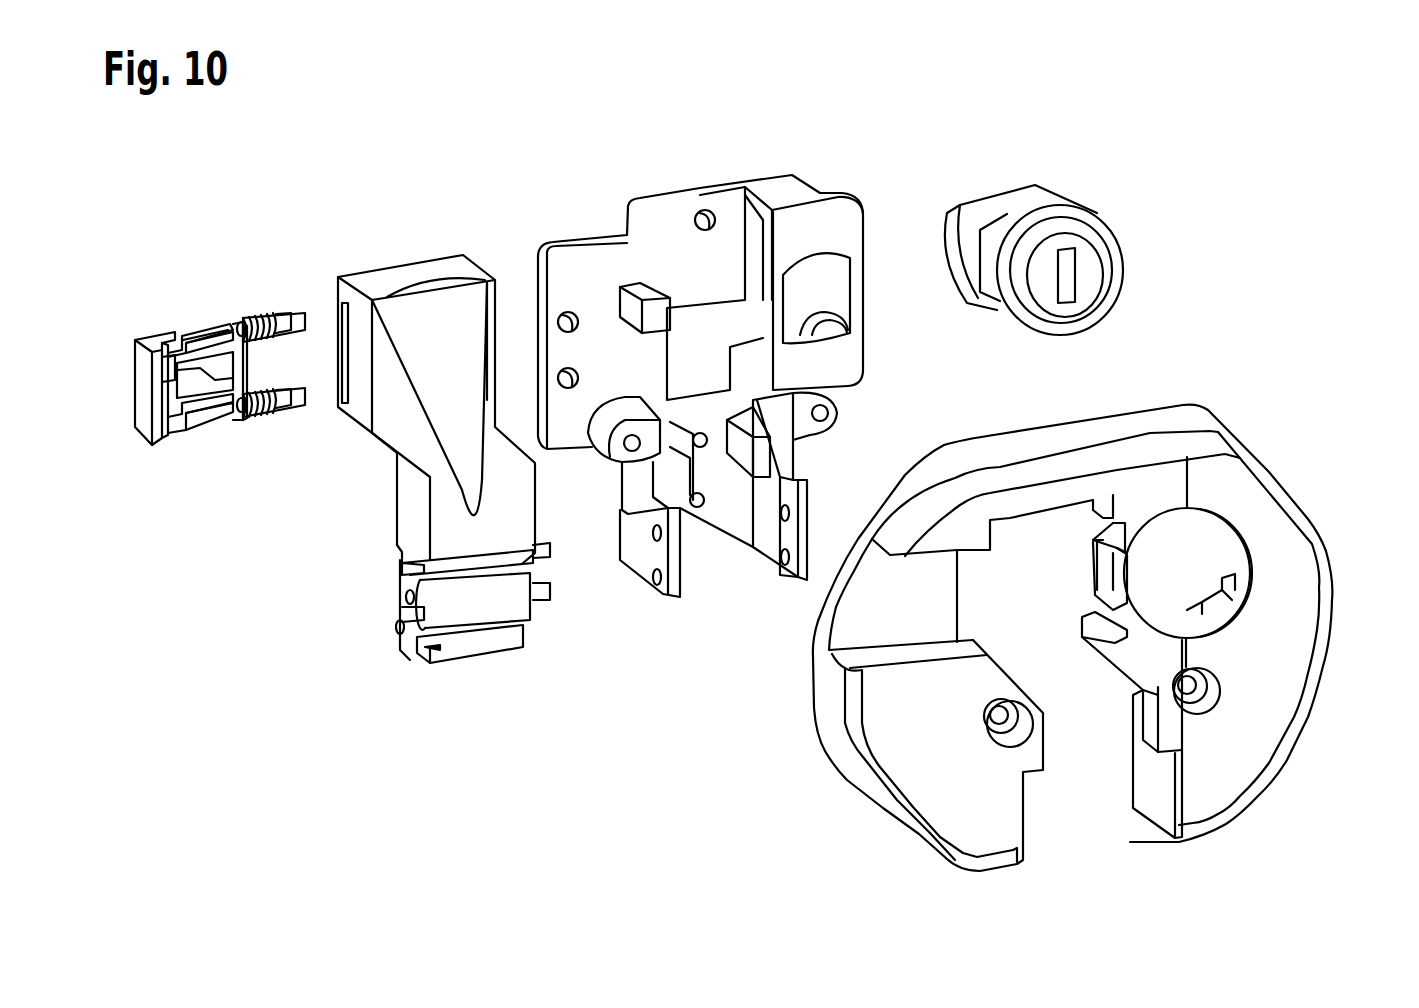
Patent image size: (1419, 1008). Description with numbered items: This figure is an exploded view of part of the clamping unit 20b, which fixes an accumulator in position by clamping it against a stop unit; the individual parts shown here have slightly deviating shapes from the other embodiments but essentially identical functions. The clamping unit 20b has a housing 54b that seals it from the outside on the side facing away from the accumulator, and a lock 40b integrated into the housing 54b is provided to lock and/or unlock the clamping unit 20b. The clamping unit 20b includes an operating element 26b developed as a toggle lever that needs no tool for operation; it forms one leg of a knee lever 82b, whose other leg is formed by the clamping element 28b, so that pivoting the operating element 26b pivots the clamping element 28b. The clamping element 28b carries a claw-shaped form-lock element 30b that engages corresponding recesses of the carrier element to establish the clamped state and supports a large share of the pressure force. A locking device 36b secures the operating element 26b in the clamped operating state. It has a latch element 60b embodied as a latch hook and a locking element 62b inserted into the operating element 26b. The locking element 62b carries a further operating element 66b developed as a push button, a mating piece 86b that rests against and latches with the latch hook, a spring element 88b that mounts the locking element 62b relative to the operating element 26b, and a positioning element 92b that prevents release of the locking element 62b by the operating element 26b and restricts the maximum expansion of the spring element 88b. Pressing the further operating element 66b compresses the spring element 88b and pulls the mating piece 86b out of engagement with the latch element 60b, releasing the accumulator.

The clamping unit 20b is at (545, 186).
The latch element 60b is at (660, 318).
The locking device 36b is at (246, 286).
The positioning element 92b is at (205, 343).
The spring element 88b is at (283, 316).
The operating element 26b is at (382, 320).
The mating piece 86b is at (168, 377).
The further operating element 66b is at (147, 413).
The locking element 62b is at (238, 407).
The knee lever 82b is at (372, 566).
The form-lock element 30b is at (450, 650).
The clamping element 28b is at (482, 637).
The lock 40b is at (1113, 268).
The housing 54b is at (1300, 598).